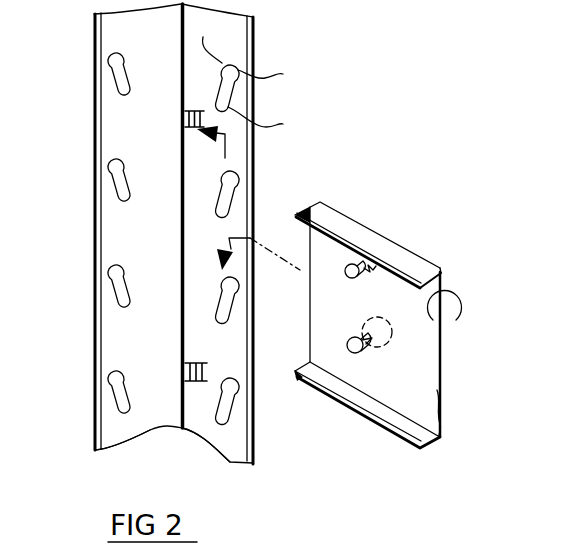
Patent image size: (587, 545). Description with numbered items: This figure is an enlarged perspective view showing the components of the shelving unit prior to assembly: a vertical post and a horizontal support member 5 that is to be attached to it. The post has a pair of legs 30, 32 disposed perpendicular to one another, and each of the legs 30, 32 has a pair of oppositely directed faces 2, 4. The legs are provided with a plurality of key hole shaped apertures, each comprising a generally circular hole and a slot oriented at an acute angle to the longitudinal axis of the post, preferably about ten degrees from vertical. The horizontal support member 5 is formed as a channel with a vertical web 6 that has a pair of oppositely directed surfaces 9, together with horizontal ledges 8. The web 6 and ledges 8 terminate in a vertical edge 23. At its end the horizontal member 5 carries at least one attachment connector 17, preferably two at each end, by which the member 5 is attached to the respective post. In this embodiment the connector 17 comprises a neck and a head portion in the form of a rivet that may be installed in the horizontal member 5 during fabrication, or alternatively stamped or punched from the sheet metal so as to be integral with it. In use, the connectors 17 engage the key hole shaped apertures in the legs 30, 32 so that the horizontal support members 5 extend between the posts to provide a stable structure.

The face 2 is at (94, 92).
The face 4 is at (138, 227).
The horizontal support member 5 is at (447, 396).
The vertical web 6 is at (440, 355).
The horizontal ledge 8 is at (337, 228).
The surface 9 is at (456, 320).
The attachment connector 17 is at (371, 315).
The vertical edge 23 is at (310, 318).
The leg 30 is at (126, 456).
The leg 32 is at (221, 473).